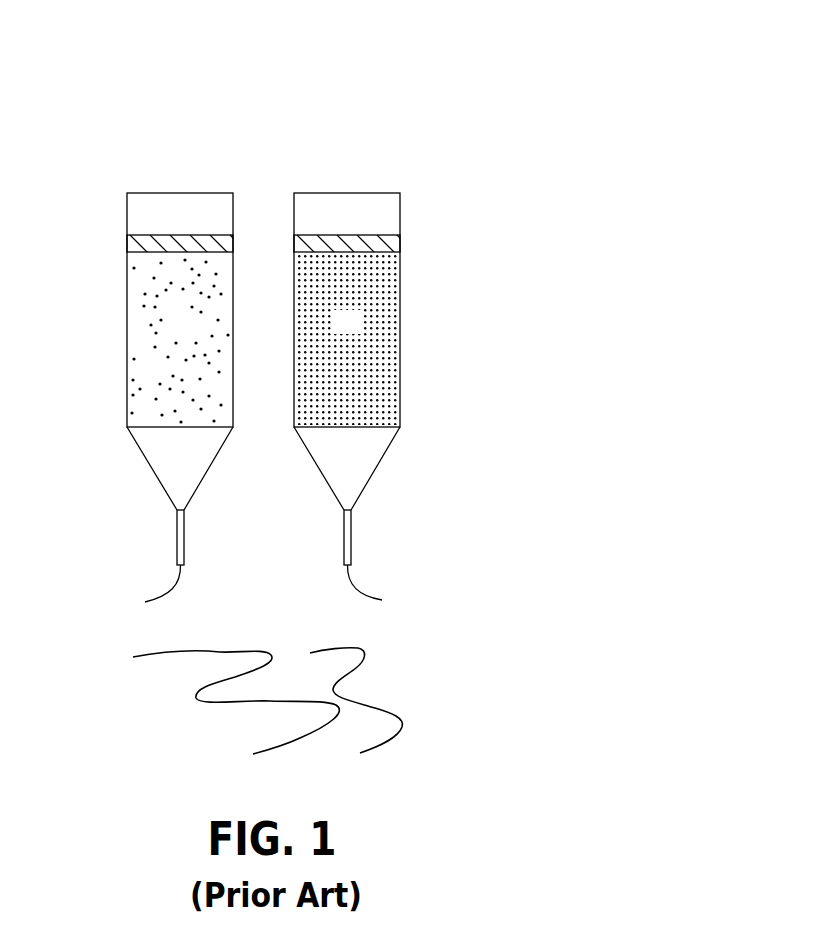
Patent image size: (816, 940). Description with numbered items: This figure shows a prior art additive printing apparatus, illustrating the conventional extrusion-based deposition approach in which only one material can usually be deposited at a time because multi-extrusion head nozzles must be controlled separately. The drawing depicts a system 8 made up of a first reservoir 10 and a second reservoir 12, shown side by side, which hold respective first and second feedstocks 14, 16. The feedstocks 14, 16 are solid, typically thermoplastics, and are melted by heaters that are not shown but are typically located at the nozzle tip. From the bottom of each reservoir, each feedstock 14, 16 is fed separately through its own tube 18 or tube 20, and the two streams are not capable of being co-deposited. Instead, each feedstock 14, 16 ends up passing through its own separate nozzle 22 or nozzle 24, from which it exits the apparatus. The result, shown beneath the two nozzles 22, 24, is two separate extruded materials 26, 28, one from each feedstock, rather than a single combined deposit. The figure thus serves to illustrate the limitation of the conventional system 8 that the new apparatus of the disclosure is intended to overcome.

The system 8 is at (335, 82).
The first reservoir 10 is at (104, 326).
The second reservoir 12 is at (437, 326).
The first feedstock 14 is at (179, 340).
The second feedstock 16 is at (347, 339).
The tube 18 is at (176, 546).
The tube 20 is at (352, 546).
The nozzle 22 is at (147, 590).
The nozzle 24 is at (376, 589).
The extruded material 26 is at (185, 696).
The extruded material 28 is at (415, 709).